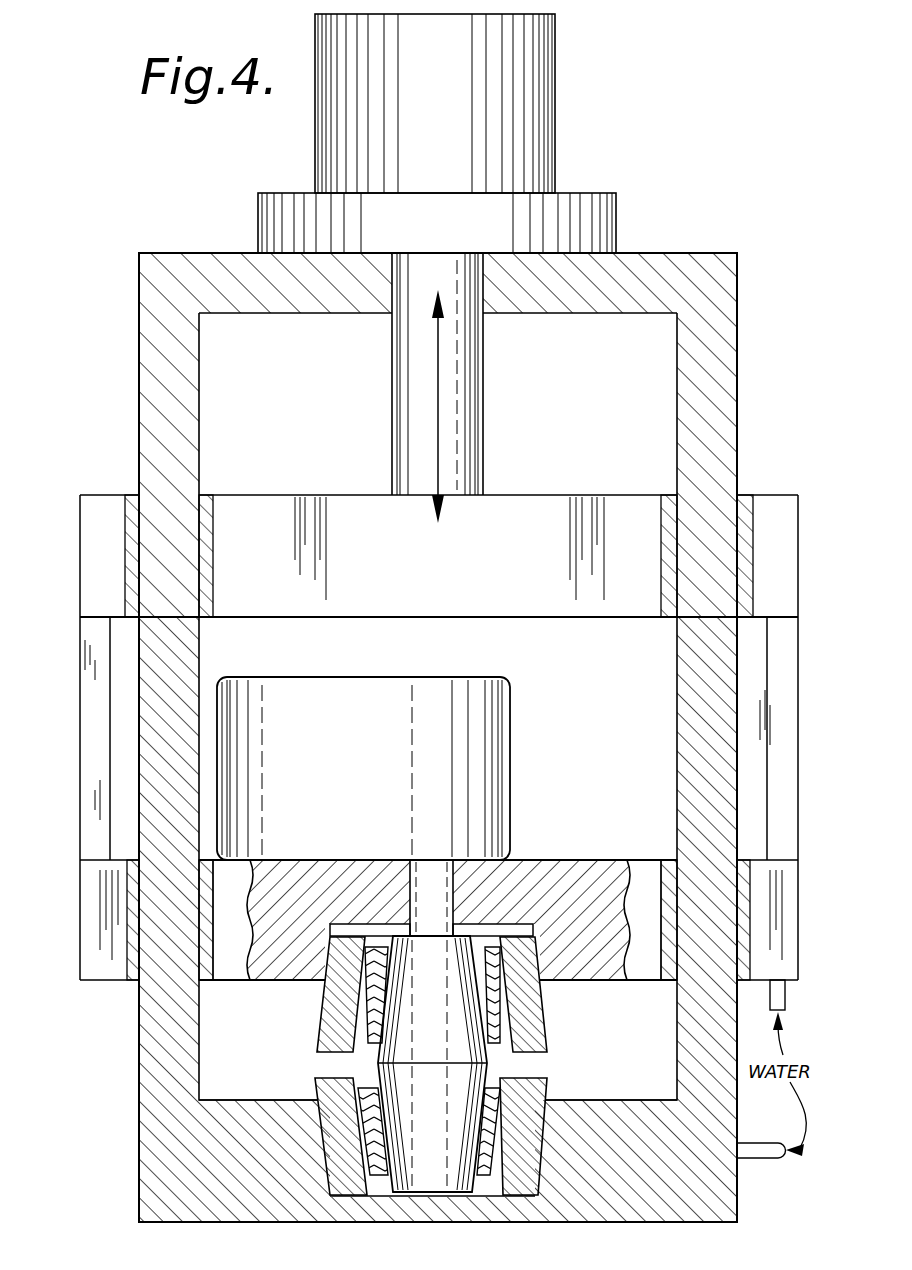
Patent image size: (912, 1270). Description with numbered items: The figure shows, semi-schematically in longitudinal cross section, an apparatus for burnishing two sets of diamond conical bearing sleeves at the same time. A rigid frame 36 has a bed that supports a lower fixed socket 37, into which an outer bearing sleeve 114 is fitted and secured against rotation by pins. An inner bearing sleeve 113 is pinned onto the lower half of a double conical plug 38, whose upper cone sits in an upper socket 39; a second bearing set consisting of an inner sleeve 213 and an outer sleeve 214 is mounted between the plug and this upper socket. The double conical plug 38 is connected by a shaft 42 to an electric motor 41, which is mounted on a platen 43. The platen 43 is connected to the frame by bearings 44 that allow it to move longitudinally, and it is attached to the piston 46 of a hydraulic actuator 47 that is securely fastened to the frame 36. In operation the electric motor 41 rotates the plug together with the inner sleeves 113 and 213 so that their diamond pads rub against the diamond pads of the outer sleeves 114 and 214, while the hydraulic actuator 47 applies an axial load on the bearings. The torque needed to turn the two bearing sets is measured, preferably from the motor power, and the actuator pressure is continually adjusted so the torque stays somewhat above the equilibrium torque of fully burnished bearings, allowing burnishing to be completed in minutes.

The rigid frame 36 is at (139, 1173).
The lower fixed socket 37 is at (316, 1086).
The double conical plug 38 is at (465, 958).
The upper socket 39 is at (568, 900).
The electric motor 41 is at (495, 745).
The shaft 42 is at (447, 897).
The platen 43 is at (607, 868).
The bearings 44 is at (207, 605).
The piston 46 is at (460, 386).
The hydraulic actuator 47 is at (557, 120).
The inner bearing sleeve 113 is at (500, 1076).
The outer bearing sleeve 114 is at (487, 1090).
The inner sleeve 213 is at (376, 947).
The outer sleeve 214 is at (350, 940).